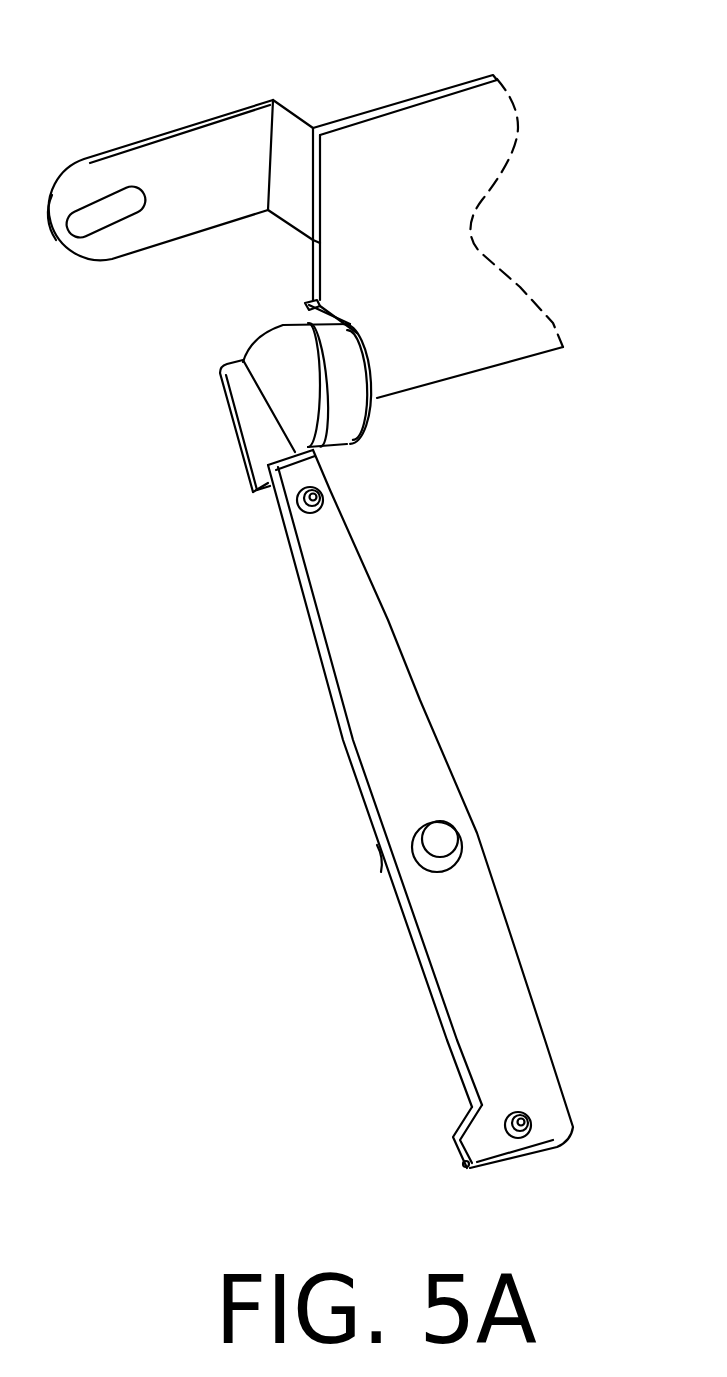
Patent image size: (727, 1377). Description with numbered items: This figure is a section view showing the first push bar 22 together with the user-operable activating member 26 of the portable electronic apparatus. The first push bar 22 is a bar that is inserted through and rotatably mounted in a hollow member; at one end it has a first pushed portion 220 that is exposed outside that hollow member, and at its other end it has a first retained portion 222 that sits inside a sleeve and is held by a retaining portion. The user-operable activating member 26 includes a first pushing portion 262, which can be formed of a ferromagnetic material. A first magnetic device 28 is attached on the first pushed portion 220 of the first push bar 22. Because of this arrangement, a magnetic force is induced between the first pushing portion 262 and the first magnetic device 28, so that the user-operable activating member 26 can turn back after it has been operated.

The user-operable activating member 26 is at (230, 112).
The first pushing portion 262 is at (373, 423).
The first magnetic device 28 is at (343, 427).
The first pushed portion 220 is at (267, 380).
The first push bar 22 is at (320, 653).
The first retained portion 222 is at (467, 1163).